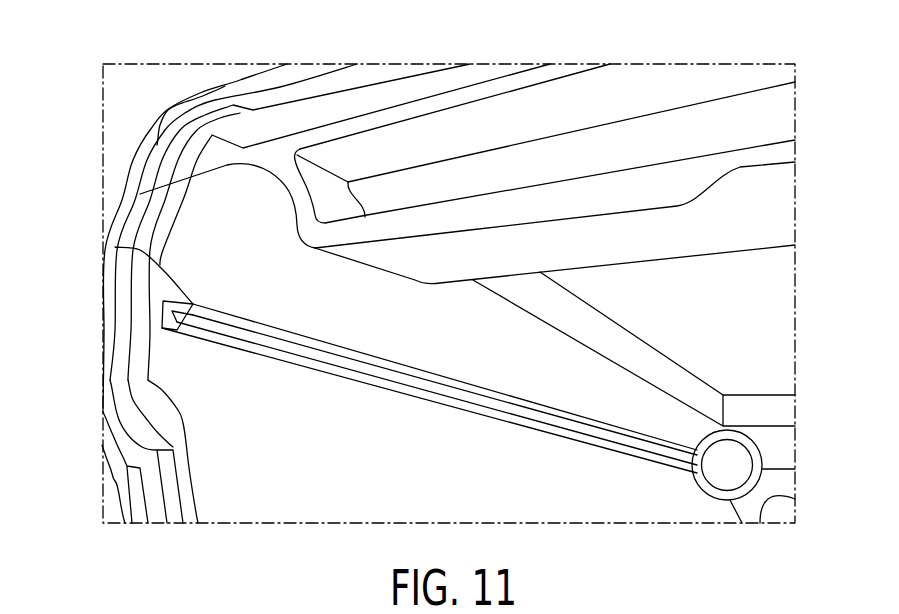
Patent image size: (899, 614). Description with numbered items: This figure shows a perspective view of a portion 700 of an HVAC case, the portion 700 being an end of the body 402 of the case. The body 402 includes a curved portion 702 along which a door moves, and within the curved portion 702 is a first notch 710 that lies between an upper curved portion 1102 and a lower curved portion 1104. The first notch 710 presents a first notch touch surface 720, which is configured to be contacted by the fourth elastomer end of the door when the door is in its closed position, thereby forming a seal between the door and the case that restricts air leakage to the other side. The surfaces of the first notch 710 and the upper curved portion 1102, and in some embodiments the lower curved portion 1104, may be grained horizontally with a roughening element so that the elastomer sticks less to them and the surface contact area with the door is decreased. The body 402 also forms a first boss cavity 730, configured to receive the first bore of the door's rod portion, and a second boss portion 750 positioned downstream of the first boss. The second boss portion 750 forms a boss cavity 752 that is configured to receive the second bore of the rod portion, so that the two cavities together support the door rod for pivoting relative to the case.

The body 402 is at (775, 120).
The portion 700 is at (255, 157).
The curved portion 702 is at (170, 218).
The first notch 710 is at (207, 320).
The first notch touch surface 720 is at (115, 247).
The first boss cavity 730 is at (243, 238).
The second boss portion 750 is at (760, 453).
The boss cavity 752 is at (729, 470).
The upper curved portion 1102 is at (270, 237).
The lower curved portion 1104 is at (205, 365).